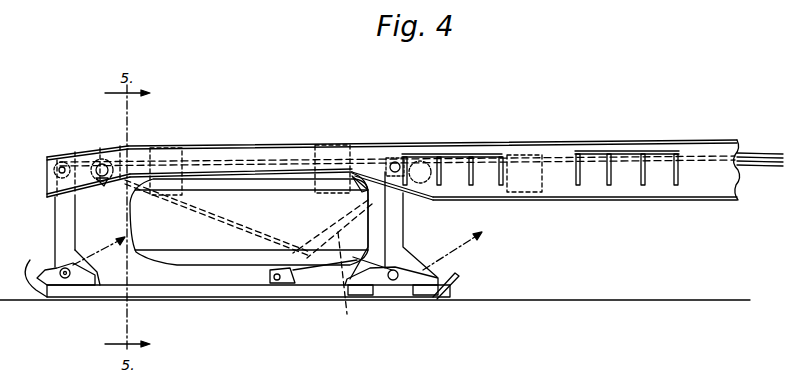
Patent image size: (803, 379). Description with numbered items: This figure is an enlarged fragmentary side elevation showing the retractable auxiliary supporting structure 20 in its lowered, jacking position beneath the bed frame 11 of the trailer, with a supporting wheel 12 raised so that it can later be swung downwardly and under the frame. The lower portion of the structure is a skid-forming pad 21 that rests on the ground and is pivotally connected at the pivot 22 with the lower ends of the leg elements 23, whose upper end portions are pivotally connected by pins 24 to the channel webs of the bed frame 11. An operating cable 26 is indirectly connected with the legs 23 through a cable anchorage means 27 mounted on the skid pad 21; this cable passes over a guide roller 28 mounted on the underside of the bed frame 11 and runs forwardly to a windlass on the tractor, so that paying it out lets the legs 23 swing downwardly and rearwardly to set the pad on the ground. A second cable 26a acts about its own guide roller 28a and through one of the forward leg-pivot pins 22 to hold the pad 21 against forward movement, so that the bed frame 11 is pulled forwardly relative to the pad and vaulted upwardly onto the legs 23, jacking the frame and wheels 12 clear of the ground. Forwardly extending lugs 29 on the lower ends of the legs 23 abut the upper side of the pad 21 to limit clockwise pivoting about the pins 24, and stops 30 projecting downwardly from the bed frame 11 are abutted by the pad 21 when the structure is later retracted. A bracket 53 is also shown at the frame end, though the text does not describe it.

The bed frame 11 is at (666, 140).
The supporting wheels 12 is at (199, 272).
The retractable supporting structure 20 is at (414, 233).
The skid-forming pad 21 is at (264, 298).
The pivot 22 is at (61, 271).
The leg elements 23 is at (55, 228).
The pins 24 is at (398, 160).
The cable 26 is at (300, 262).
The cable 26a is at (280, 236).
The cable anchorage means 27 is at (292, 284).
The guide roller 28 is at (440, 152).
The guide roller 28a is at (102, 158).
The forwardly extending lugs 29 is at (100, 286).
The stops 30 is at (183, 150).
The bracket 53 is at (60, 150).